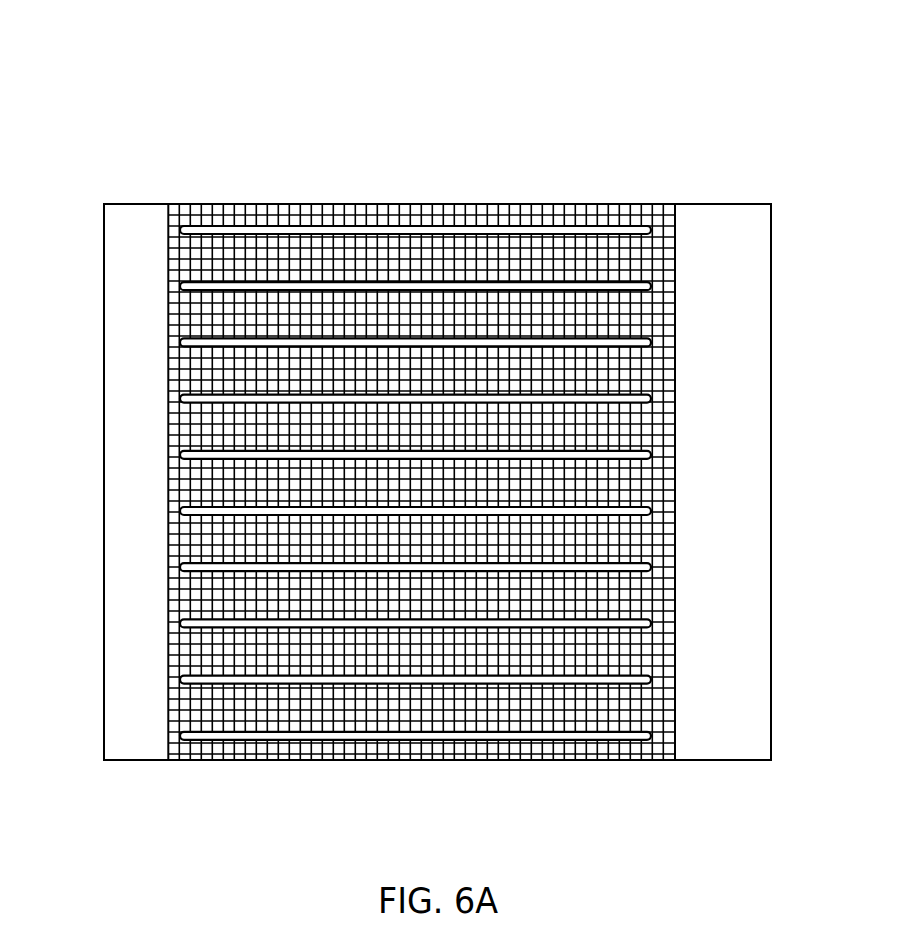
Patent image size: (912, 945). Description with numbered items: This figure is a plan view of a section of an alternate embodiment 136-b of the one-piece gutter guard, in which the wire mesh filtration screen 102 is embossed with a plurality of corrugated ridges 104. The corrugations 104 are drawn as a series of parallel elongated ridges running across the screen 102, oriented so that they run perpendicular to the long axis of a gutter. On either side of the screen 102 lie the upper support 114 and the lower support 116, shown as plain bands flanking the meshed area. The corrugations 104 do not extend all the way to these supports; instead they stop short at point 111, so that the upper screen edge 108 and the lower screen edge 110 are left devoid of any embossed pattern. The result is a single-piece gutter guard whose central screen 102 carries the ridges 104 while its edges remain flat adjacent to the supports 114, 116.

The alternate embodiment of the one-piece gutter guard 136-b is at (296, 63).
The upper screen edge 108 is at (118, 442).
The lower screen edge 110 is at (715, 442).
The upper support 114 is at (147, 344).
The lower support 116 is at (737, 512).
The screen 102 is at (468, 238).
The corrugated ridges 104 is at (441, 518).
The point where corrugations stop 111 is at (647, 392).